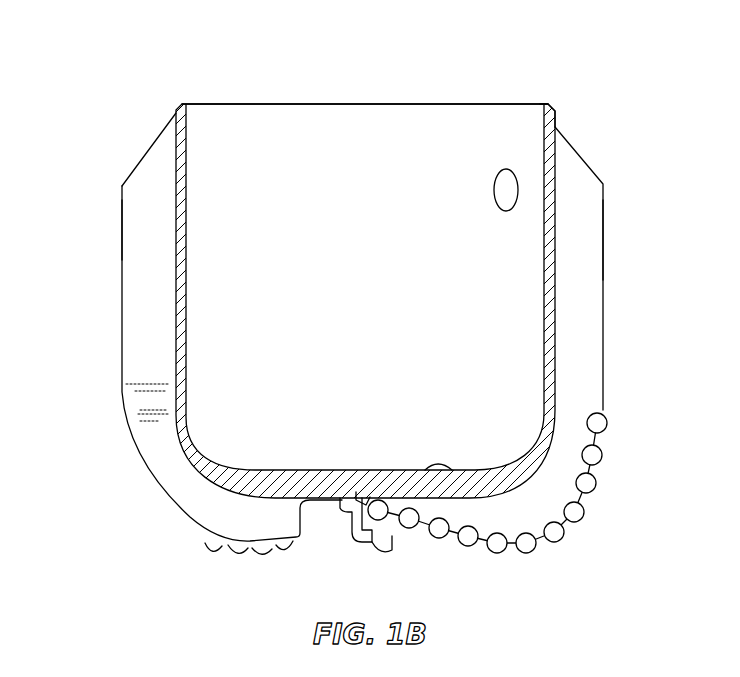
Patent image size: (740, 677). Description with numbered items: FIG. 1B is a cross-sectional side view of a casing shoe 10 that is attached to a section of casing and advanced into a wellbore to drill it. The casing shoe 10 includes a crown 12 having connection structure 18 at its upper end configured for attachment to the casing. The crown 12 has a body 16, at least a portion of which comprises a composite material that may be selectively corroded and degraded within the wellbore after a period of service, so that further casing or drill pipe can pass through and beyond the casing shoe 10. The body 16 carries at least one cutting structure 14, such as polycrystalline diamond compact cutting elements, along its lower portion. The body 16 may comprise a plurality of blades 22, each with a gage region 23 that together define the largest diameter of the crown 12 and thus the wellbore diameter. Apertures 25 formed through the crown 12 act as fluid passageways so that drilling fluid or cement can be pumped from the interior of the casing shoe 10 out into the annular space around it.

The casing shoe 10 is at (118, 76).
The crown 12 is at (138, 503).
The cutting structure 14 is at (588, 481).
The body 16 is at (254, 150).
The connection structure 18 is at (562, 101).
The blades 22 is at (155, 292).
The gage region 23 is at (122, 238).
The apertures 25 is at (432, 455).